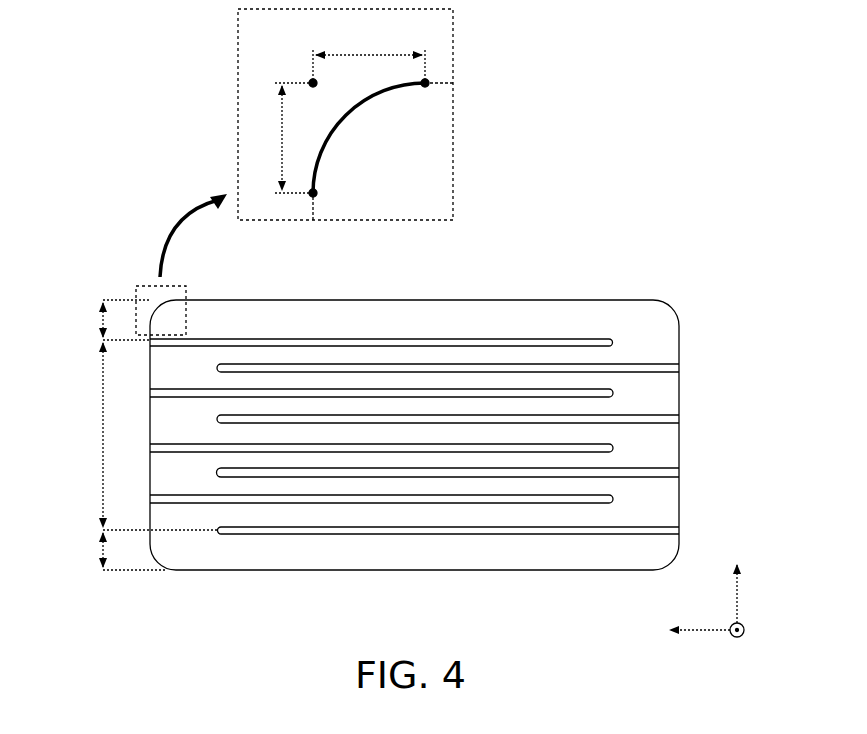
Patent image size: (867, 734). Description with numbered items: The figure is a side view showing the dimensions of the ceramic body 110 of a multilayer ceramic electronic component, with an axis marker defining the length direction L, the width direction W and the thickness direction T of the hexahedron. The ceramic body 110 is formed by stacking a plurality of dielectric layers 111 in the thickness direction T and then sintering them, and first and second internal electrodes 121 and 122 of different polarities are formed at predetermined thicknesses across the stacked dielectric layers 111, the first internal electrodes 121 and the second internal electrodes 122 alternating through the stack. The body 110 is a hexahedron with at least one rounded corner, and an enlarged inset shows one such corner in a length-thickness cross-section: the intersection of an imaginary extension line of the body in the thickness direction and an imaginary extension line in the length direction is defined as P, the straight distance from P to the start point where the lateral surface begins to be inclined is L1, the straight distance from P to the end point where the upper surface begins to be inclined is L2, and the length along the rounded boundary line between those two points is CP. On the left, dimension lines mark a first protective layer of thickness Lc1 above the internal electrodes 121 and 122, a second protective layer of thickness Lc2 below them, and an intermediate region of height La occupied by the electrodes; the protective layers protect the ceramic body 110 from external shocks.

The ceramic body 110 is at (680, 297).
The dielectric layers 111 is at (582, 352).
The first internal electrode 121 is at (521, 339).
The second internal electrode 122 is at (648, 363).
The intersection point P is at (312, 80).
The rounded boundary line length CP is at (356, 126).
The straight distance to start point L1 is at (284, 138).
The straight distance to end point L2 is at (369, 55).
The first protective layer thickness Lc1 is at (102, 320).
The active area length La is at (138, 436).
The second protective layer thickness Lc2 is at (110, 551).
The thickness direction T is at (736, 579).
The length direction L is at (688, 631).
The width direction W is at (748, 639).